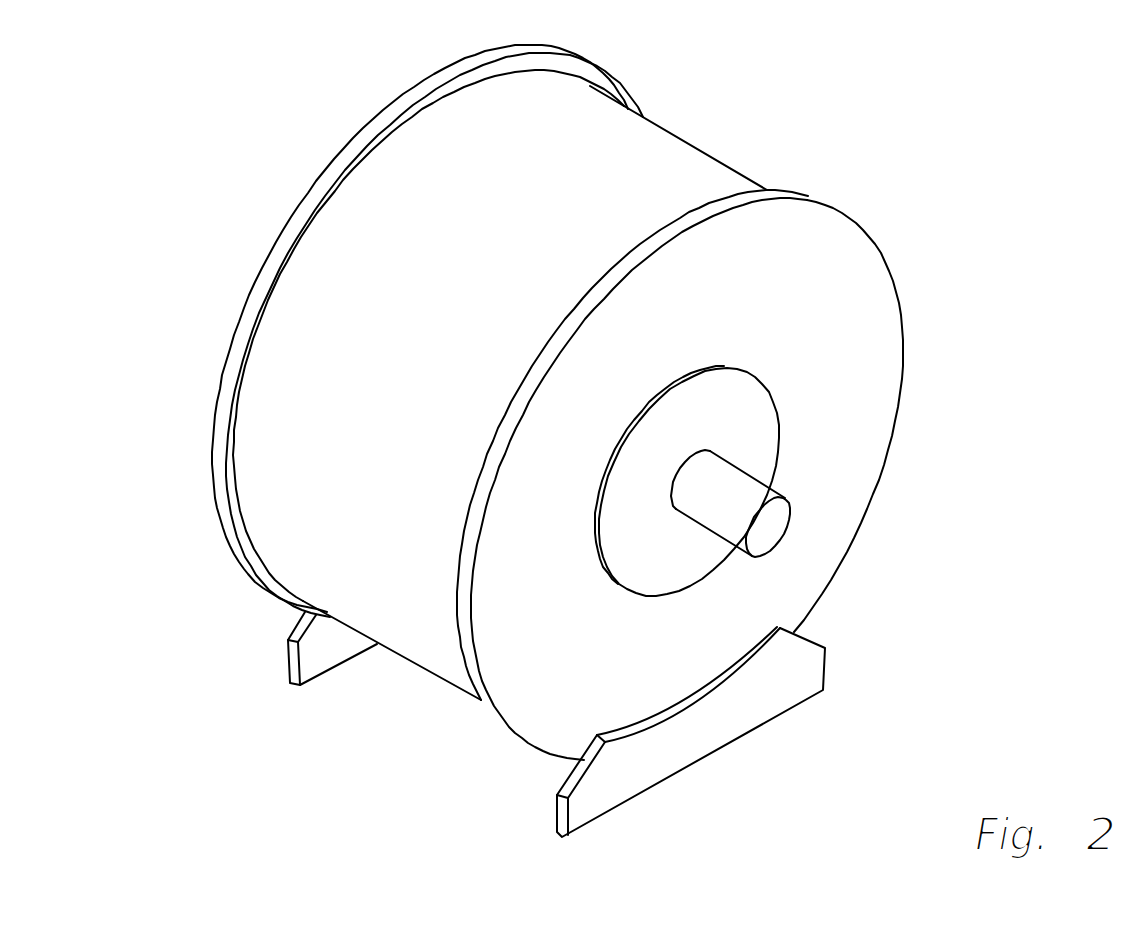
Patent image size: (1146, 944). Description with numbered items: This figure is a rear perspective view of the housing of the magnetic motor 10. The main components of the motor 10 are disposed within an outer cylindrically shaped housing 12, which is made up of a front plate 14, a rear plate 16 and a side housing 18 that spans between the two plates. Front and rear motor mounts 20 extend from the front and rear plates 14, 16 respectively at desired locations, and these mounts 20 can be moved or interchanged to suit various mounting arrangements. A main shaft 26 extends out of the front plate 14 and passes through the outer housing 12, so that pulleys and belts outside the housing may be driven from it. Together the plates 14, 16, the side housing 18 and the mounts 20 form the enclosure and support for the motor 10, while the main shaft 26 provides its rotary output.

The magnetic motor 10 is at (750, 78).
The outer housing 12 is at (651, 88).
The front plate 14 is at (212, 388).
The rear plate 16 is at (872, 352).
The side housing 18 is at (300, 493).
The motor mounts 20 is at (318, 653).
The main shaft 26 is at (738, 548).